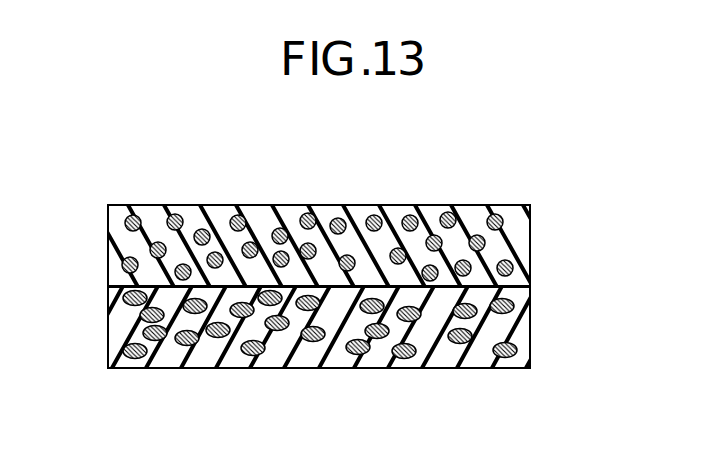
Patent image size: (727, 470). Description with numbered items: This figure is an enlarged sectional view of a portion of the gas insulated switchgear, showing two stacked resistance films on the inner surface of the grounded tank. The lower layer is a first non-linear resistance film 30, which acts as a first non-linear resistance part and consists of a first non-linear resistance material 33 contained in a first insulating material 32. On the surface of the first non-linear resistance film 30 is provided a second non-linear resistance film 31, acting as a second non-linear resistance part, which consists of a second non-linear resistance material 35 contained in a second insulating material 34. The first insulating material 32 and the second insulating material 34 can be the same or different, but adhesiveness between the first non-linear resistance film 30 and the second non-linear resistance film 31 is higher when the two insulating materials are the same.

The first non-linear resistance film 30 is at (319, 297).
The second non-linear resistance film 31 is at (294, 224).
The first insulating material 32 is at (330, 359).
The first non-linear resistance material 33 is at (257, 360).
The second insulating material 34 is at (472, 222).
The second non-linear resistance material 35 is at (336, 222).